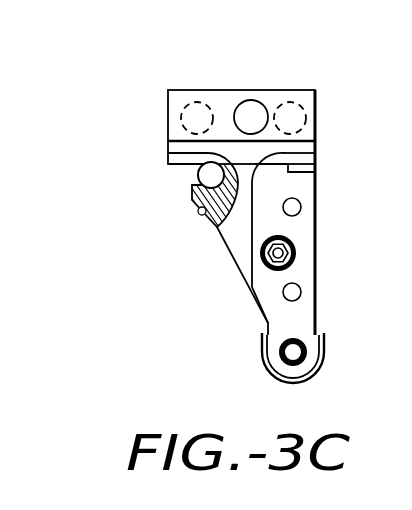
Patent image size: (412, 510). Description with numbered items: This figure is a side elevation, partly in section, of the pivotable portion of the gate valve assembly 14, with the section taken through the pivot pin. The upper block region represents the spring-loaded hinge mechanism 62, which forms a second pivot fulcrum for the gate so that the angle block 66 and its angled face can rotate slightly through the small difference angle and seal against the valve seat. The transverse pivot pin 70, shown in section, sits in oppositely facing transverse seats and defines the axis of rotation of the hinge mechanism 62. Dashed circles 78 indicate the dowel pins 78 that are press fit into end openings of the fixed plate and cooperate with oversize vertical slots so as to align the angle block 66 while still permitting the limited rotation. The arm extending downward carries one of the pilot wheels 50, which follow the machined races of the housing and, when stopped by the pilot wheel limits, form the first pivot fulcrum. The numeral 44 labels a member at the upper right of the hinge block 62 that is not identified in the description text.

The gate valve assembly 14 is at (170, 249).
The frame member 44 is at (318, 93).
The pilot wheels 50 is at (270, 373).
The spring-loaded hinge mechanism 62 is at (149, 138).
The elongated transverse angle block 66 is at (197, 207).
The transverse pivot pin 70 is at (212, 170).
The dowel pins 78 is at (196, 123).